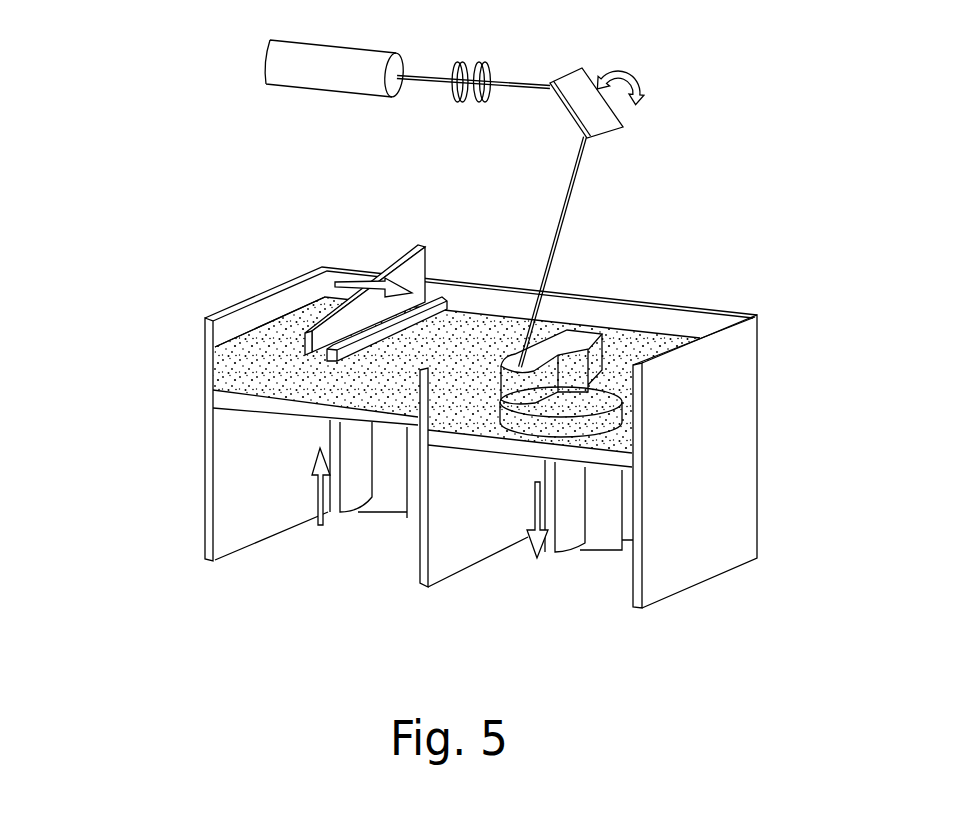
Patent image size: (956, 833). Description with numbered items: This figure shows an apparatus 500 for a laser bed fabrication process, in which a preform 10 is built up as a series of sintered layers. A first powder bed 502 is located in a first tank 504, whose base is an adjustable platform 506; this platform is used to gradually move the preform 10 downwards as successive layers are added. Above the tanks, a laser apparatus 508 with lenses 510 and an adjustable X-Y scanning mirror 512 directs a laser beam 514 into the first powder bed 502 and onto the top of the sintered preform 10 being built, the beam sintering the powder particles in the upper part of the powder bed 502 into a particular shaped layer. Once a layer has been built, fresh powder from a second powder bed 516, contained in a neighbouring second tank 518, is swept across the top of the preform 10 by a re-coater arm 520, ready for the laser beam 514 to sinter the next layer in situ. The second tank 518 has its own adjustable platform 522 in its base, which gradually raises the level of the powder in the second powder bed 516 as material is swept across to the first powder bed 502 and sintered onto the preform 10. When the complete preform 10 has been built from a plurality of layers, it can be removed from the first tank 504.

The preform 10 is at (578, 329).
The apparatus 500 is at (251, 198).
The first powder bed 502 is at (632, 432).
The first tank 504 is at (647, 333).
The adjustable platform 506 is at (491, 457).
The laser apparatus 508 is at (279, 92).
The lenses 510 is at (506, 60).
The adjustable X-Y scanning mirror 512 is at (639, 120).
The laser beam 514 is at (581, 199).
The second powder bed 516 is at (244, 373).
The second tank 518 is at (239, 364).
The re-coater arm 520 is at (329, 314).
The adjustable platform 522 is at (232, 406).